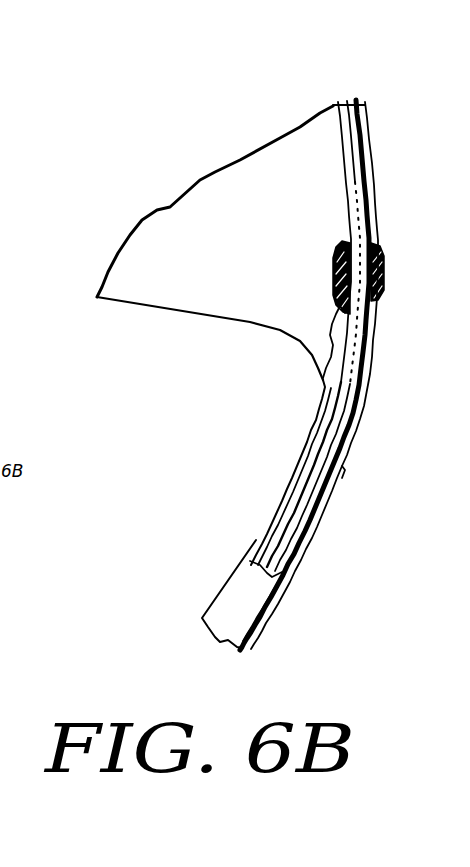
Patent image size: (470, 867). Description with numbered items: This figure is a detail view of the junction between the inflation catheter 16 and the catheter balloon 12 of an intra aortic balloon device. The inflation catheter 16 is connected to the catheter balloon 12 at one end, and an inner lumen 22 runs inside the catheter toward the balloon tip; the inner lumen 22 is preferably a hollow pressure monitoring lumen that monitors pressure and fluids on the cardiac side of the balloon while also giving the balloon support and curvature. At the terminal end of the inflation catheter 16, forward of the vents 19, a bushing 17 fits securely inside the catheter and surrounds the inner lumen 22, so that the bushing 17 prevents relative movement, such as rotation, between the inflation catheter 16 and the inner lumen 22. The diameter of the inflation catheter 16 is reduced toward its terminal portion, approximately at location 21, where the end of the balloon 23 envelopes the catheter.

The catheter balloon 12 is at (232, 239).
The inner lumen 22 is at (360, 178).
The bushing 17 is at (384, 277).
The vents 19 is at (333, 345).
The end of the balloon 23 is at (302, 424).
The location of reduced diameter 21 is at (345, 472).
The inflation catheter 16 is at (263, 606).